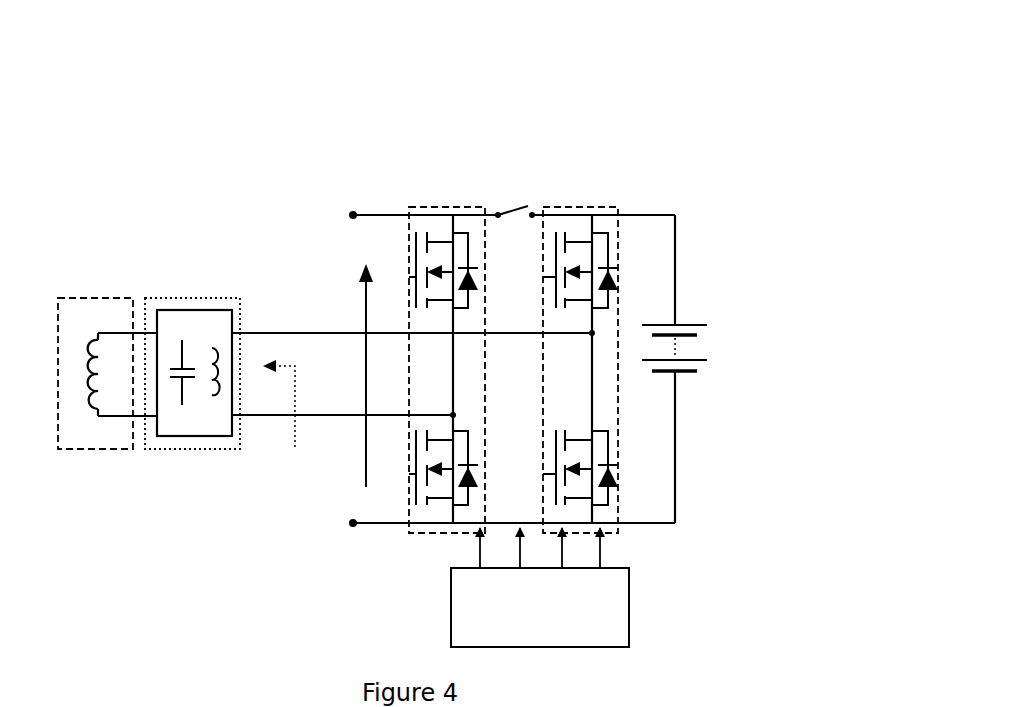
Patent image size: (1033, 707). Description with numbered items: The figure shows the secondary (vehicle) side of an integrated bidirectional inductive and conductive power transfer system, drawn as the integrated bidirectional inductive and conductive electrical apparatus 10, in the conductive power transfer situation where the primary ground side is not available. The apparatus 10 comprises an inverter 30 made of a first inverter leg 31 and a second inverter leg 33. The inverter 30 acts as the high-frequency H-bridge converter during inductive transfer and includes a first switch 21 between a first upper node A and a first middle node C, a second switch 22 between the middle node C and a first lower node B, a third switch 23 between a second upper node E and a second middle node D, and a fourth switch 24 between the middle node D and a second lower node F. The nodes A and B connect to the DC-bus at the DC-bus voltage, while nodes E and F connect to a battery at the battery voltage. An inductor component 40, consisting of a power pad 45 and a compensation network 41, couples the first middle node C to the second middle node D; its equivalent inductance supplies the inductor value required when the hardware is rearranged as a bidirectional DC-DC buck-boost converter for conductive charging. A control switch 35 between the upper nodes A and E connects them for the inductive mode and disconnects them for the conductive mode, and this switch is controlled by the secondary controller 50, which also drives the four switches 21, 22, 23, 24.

The integrated bidirectional inductive and conductive electrical apparatus 10 is at (137, 122).
The first switch 21 is at (431, 269).
The second switch 22 is at (428, 470).
The third switch 23 is at (593, 268).
The fourth switch 24 is at (595, 467).
The inverter 30 is at (358, 132).
The first inverter leg 31 is at (406, 207).
The second leg of secondary inverter 33 is at (620, 207).
The control switch 35 is at (518, 256).
The inductor component 40 is at (155, 407).
The compensation network 41 is at (192, 411).
The power pad 45 is at (100, 452).
The secondary controller 50 is at (631, 616).